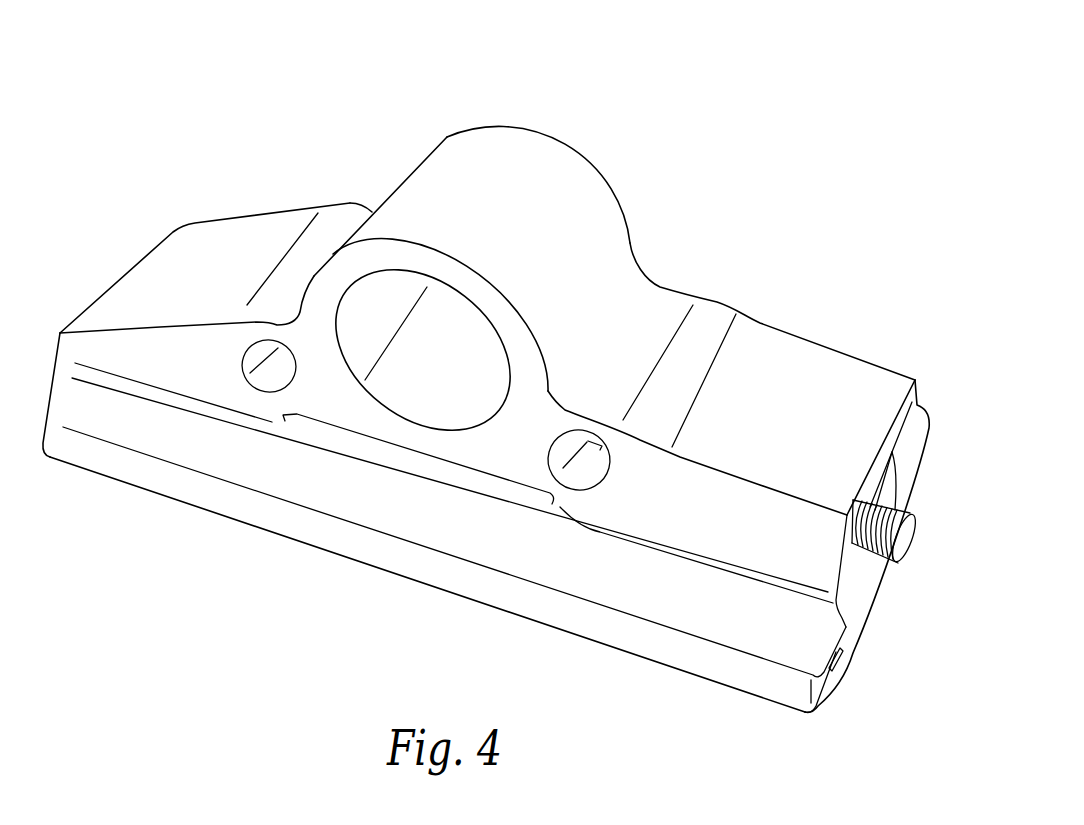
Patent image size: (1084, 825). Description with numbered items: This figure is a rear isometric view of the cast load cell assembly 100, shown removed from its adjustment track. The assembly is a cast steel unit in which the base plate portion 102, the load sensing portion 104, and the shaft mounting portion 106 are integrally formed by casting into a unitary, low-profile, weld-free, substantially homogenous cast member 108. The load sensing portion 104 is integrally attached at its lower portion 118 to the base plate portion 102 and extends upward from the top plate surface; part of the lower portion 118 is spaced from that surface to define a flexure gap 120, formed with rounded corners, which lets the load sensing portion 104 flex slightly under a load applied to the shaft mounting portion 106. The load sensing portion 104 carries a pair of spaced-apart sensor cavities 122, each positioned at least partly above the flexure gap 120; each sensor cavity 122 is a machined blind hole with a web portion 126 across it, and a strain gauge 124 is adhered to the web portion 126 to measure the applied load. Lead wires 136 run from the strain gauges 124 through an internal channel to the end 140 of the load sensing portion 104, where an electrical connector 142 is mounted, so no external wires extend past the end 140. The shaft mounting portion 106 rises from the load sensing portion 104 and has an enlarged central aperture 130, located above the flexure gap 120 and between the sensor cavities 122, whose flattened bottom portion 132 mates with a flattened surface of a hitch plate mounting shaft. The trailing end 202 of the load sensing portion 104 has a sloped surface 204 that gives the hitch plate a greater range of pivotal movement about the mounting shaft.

The cast load cell assembly 100 is at (198, 98).
The base plate portion 102 is at (133, 453).
The load sensing portion 104 is at (225, 387).
The shaft mounting portion 106 is at (437, 163).
The cast member 108 is at (300, 217).
The lower portion 118 is at (130, 360).
The flexure gap 120 is at (321, 430).
The sensor cavity 122 is at (277, 380).
The strain gauge 124 is at (643, 353).
The web portion 126 is at (702, 370).
The central aperture 130 is at (395, 380).
The flattened bottom portion 132 is at (450, 390).
The lead wires 136 is at (600, 448).
The end 140 is at (897, 463).
The electrical connector 142 is at (897, 552).
The trailing end 202 is at (133, 302).
The sloped surface 204 is at (188, 267).